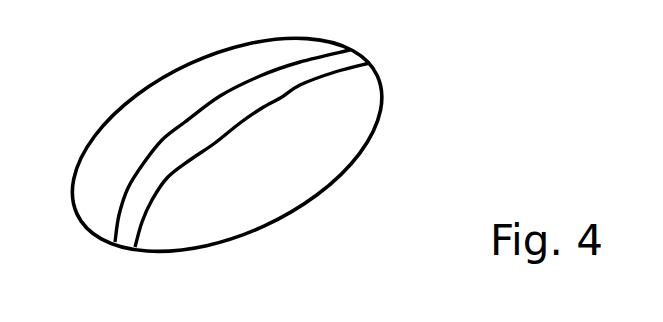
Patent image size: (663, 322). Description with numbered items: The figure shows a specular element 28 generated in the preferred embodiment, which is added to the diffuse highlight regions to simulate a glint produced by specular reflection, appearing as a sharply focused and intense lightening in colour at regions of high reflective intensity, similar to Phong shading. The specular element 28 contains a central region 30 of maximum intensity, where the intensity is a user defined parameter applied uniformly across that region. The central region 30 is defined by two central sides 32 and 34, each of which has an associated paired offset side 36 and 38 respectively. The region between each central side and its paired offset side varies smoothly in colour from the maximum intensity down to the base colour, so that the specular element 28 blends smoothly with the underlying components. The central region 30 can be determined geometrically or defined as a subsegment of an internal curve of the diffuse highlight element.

The specular element 28 is at (293, 264).
The central region 30 is at (323, 65).
The central side 32 is at (133, 172).
The central side 34 is at (263, 113).
The offset side 36 is at (198, 60).
The offset side 38 is at (342, 175).